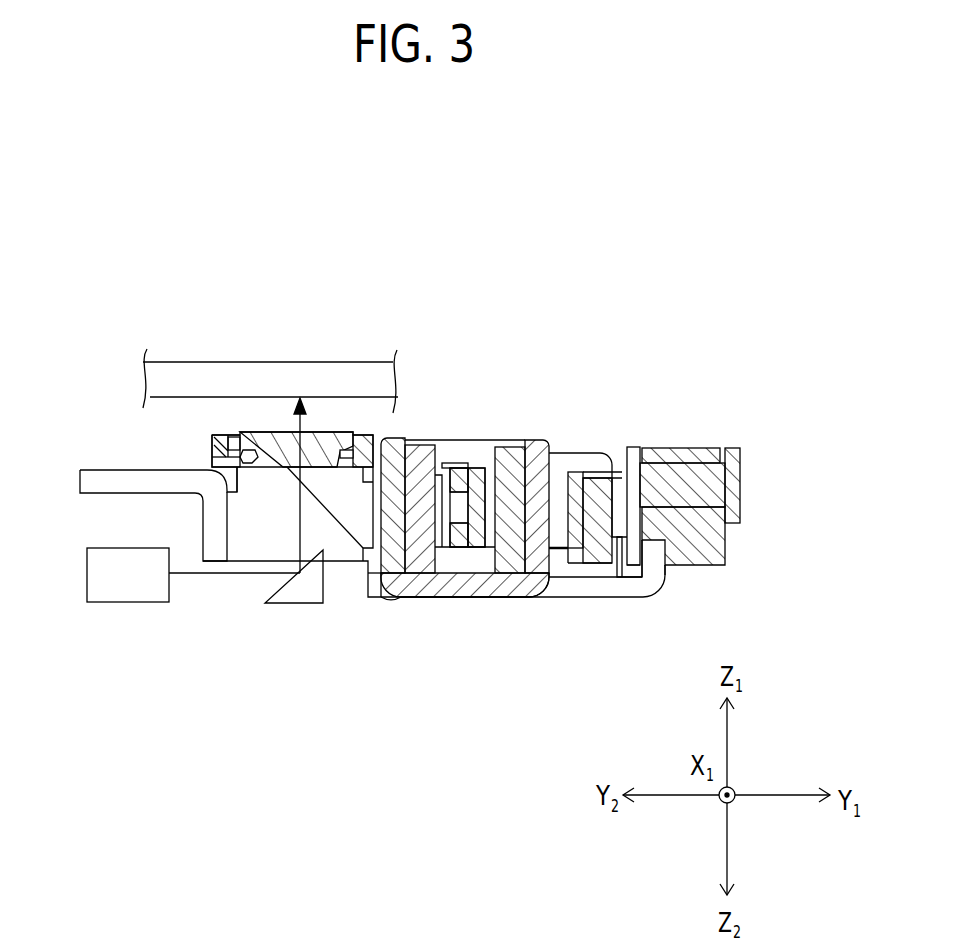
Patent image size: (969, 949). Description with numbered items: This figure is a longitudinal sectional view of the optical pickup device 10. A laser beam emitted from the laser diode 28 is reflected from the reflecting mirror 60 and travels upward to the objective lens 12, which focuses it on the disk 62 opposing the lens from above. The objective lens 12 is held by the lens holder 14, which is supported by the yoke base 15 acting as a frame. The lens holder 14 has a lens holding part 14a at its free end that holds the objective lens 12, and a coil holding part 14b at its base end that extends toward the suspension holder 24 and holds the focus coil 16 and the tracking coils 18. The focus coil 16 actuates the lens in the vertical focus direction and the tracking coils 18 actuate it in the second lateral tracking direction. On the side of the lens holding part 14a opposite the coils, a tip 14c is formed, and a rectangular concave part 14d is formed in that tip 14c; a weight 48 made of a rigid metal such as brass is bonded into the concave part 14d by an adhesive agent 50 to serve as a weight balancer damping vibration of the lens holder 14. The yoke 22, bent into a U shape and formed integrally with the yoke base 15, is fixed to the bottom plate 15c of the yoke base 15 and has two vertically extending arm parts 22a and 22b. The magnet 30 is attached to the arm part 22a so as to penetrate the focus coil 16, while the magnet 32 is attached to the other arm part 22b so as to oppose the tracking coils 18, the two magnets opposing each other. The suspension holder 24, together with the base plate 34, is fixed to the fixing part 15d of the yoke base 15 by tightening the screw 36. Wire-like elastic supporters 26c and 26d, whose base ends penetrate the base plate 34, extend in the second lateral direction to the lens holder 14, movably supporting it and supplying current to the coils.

The optical pickup device 10 is at (649, 311).
The objective lens 12 is at (337, 440).
The lens holder 14 is at (362, 522).
The lens holding part 14a is at (372, 445).
The coil holding part 14b is at (572, 472).
The tip 14c is at (232, 433).
The concave part 14d is at (245, 468).
The yoke base 15 is at (98, 485).
The bottom plate 15c is at (580, 588).
The fixing part 15d is at (653, 563).
The focus coil 16 is at (598, 453).
The tracking coils 18 is at (460, 468).
The yoke 22 is at (458, 592).
The arm part 22a is at (535, 445).
The arm part 22b is at (397, 438).
The suspension holder 24 is at (703, 448).
The elastic supporter 26c is at (634, 447).
The elastic supporter 26d is at (620, 578).
The laser diode 28 is at (118, 590).
The magnet 30 is at (510, 558).
The magnet 32 is at (420, 557).
The base plate 34 is at (725, 550).
The screw 36 is at (733, 478).
The weight 48 is at (212, 443).
The adhesive agent 50 is at (212, 457).
The reflecting mirror 60 is at (280, 603).
The disk 62 is at (253, 378).